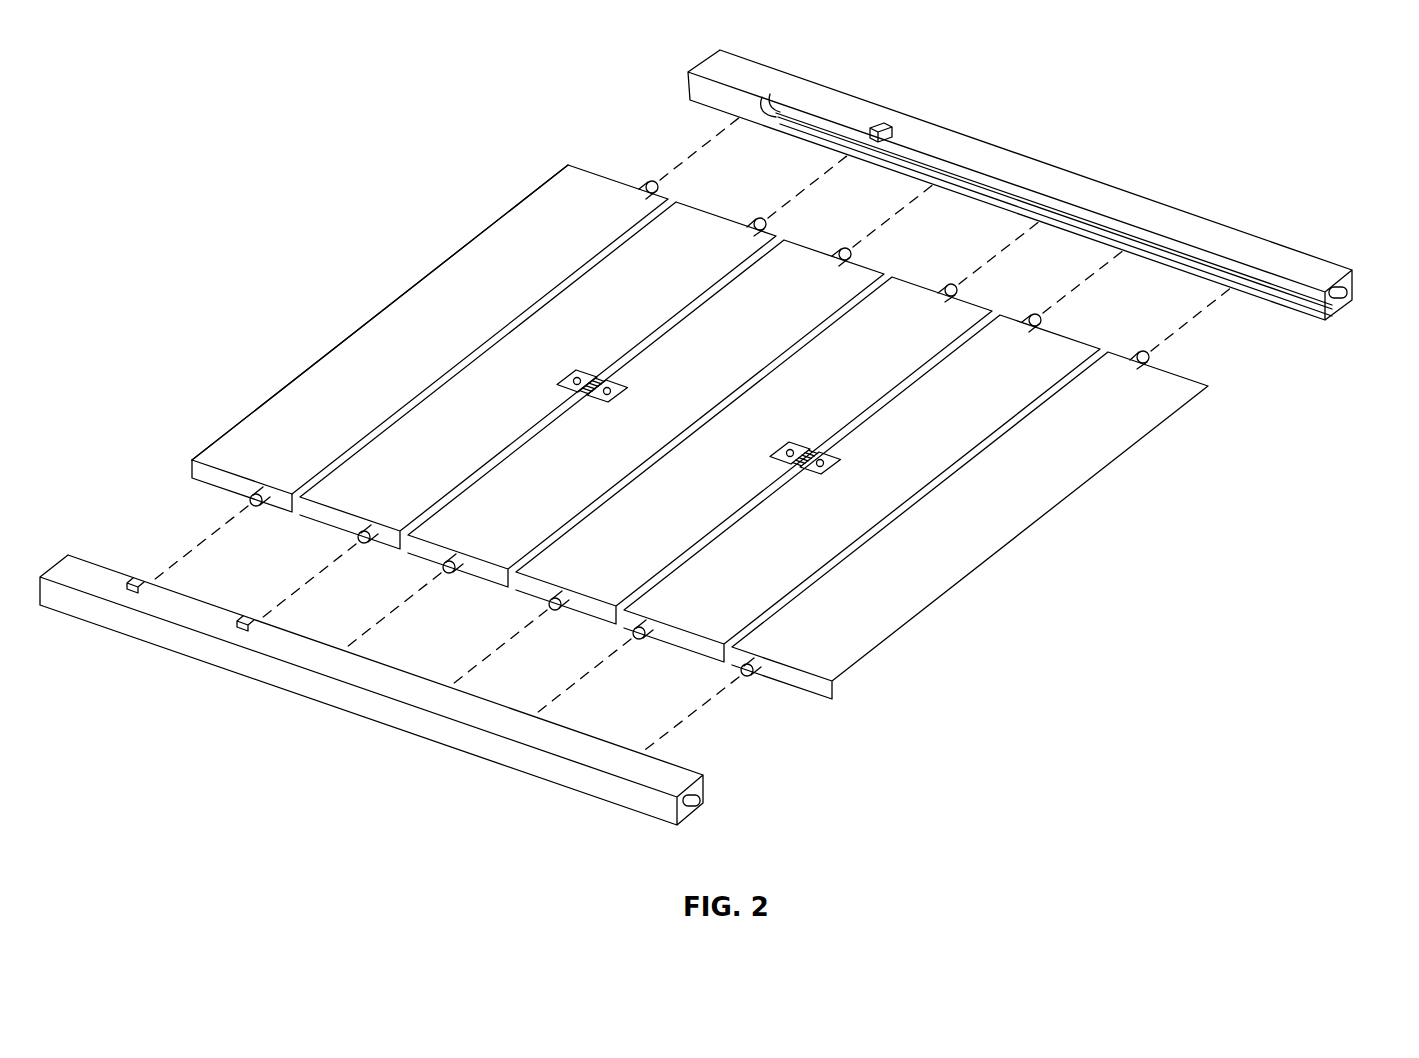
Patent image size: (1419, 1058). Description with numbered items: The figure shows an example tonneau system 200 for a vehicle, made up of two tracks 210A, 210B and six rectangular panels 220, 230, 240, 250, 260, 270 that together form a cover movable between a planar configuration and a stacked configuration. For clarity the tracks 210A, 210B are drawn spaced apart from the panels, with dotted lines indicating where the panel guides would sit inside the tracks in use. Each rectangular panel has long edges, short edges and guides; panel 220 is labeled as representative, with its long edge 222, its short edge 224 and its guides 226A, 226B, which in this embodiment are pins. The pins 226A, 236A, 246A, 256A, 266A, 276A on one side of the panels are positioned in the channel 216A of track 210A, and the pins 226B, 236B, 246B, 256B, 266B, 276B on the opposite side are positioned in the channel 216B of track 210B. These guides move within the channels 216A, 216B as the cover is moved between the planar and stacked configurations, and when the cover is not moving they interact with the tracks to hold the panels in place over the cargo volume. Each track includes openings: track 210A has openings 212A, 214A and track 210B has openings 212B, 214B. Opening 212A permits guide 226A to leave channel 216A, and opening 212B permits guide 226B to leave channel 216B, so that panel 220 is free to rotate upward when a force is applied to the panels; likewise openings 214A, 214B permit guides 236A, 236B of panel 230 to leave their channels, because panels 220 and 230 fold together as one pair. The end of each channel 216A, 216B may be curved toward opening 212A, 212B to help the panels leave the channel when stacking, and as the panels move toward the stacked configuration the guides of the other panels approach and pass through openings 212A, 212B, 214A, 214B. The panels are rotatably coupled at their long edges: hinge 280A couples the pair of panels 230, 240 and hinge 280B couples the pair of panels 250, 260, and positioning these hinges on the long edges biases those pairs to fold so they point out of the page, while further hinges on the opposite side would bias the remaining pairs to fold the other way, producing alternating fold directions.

The tonneau system 200 is at (1203, 108).
The track 210A is at (727, 72).
The track 210B is at (75, 578).
The opening 212A is at (776, 96).
The opening 212B is at (148, 585).
The opening 214A is at (882, 130).
The opening 214B is at (258, 622).
The channel 216A is at (1352, 296).
The channel 216B is at (700, 796).
The rectangular panel 220 is at (578, 188).
The long edge 222 is at (393, 303).
The short edge 224 is at (192, 468).
The guide 226A is at (641, 194).
The guide 226B is at (262, 488).
The rectangular panel 230 is at (690, 228).
The guide 236A is at (748, 239).
The guide 236B is at (370, 528).
The rectangular panel 240 is at (855, 290).
The guide 246A is at (838, 268).
The guide 246B is at (456, 560).
The rectangular panel 250 is at (960, 318).
The guide 256A is at (943, 305).
The guide 256B is at (562, 596).
The rectangular panel 260 is at (1048, 355).
The guide 266A is at (1030, 330).
The guide 266B is at (652, 630).
The rectangular panel 270 is at (1165, 392).
The guide 276A is at (1140, 366).
The guide 276B is at (758, 664).
The hinge 280A is at (584, 373).
The hinge 280B is at (809, 431).